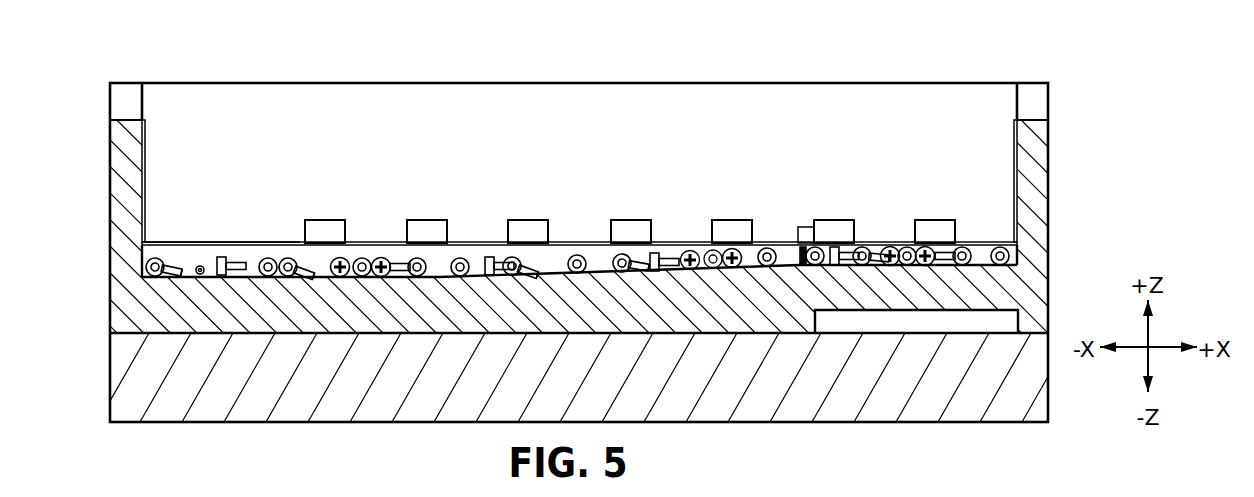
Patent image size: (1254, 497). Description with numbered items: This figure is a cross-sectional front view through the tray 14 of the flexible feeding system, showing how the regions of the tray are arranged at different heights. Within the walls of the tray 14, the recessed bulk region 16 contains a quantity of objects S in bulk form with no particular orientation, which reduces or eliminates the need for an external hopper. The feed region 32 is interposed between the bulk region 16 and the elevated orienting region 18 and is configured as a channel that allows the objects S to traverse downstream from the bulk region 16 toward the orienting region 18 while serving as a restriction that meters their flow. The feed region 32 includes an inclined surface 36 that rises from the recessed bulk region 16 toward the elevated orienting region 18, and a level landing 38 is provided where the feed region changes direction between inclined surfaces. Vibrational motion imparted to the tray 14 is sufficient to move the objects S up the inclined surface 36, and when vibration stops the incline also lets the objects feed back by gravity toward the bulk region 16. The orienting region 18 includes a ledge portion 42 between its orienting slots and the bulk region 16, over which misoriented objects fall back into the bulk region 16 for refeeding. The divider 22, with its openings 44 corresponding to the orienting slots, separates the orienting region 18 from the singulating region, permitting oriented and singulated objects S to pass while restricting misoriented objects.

The tray 14 is at (1066, 72).
The bulk region 16 is at (436, 264).
The orienting region 18 is at (474, 230).
The divider 22 is at (630, 195).
The feed region 32 is at (788, 235).
The inclined surface 36 is at (593, 275).
The level landing 38 is at (997, 263).
The ledge portion 42 is at (227, 243).
The openings 44 is at (322, 228).
The objects S is at (688, 270).